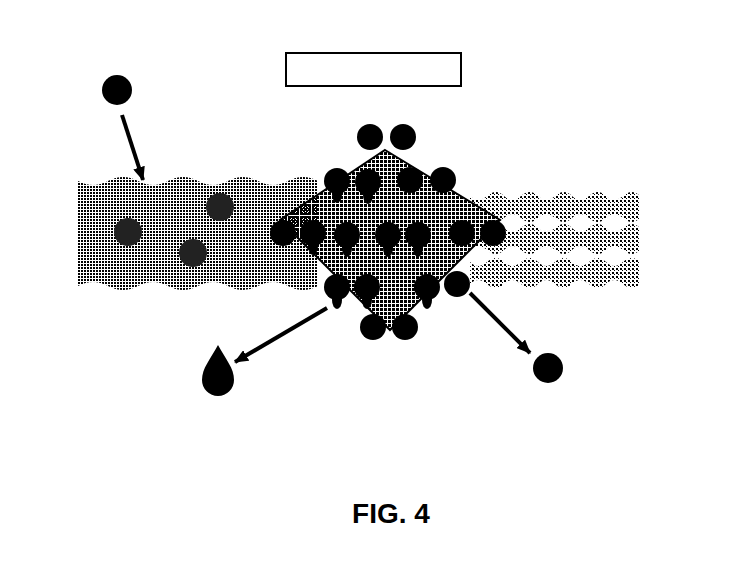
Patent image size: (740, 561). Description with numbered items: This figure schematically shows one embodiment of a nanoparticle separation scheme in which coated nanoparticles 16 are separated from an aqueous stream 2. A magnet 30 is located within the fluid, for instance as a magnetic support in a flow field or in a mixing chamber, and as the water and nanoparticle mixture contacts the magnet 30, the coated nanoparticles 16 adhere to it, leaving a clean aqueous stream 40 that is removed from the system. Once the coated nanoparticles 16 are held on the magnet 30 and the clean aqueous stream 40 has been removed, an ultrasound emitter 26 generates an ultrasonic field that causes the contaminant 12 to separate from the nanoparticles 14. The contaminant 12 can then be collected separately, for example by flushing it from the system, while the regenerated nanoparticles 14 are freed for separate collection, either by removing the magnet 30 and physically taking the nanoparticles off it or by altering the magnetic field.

The aqueous stream 2 is at (80, 247).
The contaminant 12 is at (208, 392).
The nanoparticles 14 is at (102, 88).
The coated nanoparticles 16 is at (362, 330).
The ultrasound emitter 26 is at (365, 53).
The magnet 30 is at (430, 153).
The clean aqueous stream 40 is at (572, 178).